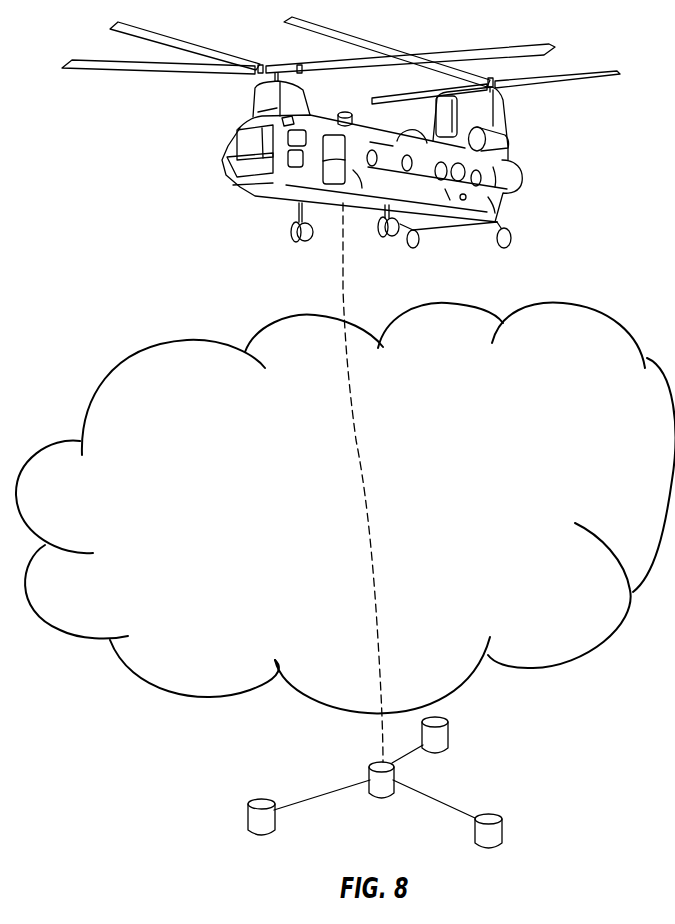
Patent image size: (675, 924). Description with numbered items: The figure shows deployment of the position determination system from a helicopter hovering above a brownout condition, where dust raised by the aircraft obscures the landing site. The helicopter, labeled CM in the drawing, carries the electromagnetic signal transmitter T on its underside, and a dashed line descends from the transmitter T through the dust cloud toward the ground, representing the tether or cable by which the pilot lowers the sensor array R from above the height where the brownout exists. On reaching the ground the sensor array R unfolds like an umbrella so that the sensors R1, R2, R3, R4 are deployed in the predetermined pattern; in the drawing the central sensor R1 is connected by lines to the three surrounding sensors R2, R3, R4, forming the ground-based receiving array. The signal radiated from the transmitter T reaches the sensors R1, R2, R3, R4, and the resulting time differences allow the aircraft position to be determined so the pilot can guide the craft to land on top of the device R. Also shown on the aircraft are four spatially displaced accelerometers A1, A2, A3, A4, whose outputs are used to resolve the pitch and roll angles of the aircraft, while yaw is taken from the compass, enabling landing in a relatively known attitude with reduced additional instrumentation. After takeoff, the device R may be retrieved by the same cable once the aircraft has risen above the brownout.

The cargo helicopter (carrier module) CM is at (233, 147).
The accelerometer A1 is at (286, 225).
The accelerometer A2 is at (382, 234).
The accelerometer A3 is at (448, 240).
The accelerometer A4 is at (518, 240).
The electromagnetic signal transmitter T is at (363, 482).
The sensor array R is at (255, 765).
The sensor R1 is at (383, 796).
The sensor R2 is at (453, 735).
The sensor R3 is at (506, 831).
The sensor R4 is at (244, 817).